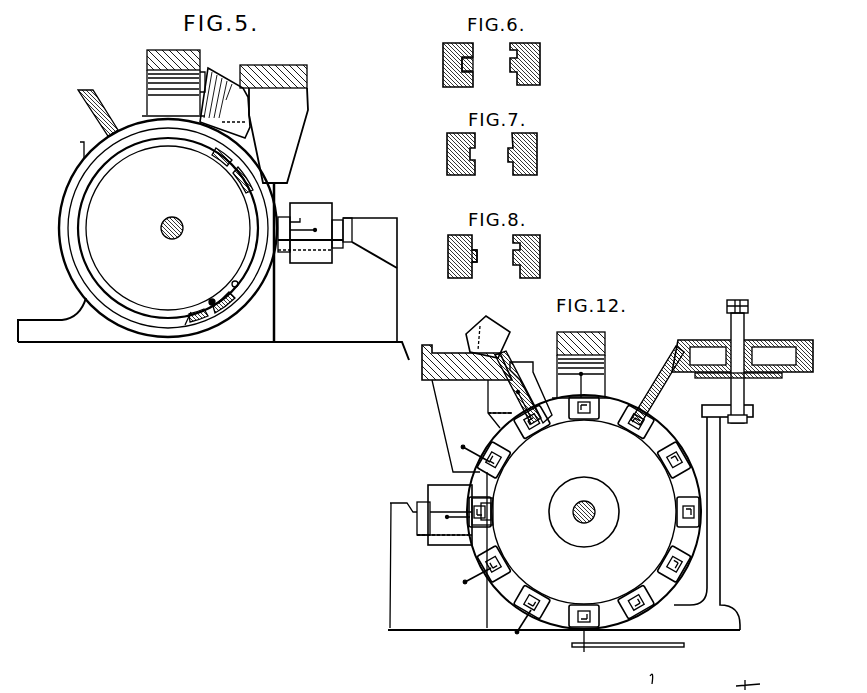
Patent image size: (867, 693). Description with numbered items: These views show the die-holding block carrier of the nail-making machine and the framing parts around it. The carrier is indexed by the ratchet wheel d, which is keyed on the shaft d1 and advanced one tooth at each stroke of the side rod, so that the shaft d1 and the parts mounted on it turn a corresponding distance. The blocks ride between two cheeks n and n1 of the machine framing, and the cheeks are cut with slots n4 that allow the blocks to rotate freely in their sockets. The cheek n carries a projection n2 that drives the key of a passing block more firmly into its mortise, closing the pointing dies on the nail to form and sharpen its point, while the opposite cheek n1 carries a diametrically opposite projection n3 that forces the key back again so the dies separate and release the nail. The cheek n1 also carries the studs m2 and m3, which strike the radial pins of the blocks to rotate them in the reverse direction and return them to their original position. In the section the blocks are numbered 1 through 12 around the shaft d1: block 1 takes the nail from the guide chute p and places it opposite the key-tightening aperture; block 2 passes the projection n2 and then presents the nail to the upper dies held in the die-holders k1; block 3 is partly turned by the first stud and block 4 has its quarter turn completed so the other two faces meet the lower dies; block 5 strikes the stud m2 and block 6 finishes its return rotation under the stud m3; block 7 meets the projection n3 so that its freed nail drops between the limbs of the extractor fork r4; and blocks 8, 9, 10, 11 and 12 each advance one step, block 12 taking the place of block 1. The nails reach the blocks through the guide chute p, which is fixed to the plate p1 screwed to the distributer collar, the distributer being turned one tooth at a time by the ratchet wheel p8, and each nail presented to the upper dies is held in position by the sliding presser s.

In FIG. 5, the cheek n1 is at (168, 228).
In FIG. 6, the cheek n1 is at (450, 62).
In FIG. 7, the cheek n1 is at (454, 152).
In FIG. 8, the cheek n1 is at (454, 254).
In FIG. 5, the shaft d1 is at (183, 228).
In FIG. 12, the shaft d1 is at (578, 522).
In FIG. 5, the slots n4 is at (232, 177).
In FIG. 5, the projection n3 is at (191, 327).
In FIG. 8, the projection n3 is at (477, 258).
In FIG. 5, the stud m2 is at (232, 282).
In FIG. 5, the stud m3 is at (209, 300).
In FIG. 6, the projection n2 is at (506, 62).
In FIG. 6, the cheek n is at (540, 66).
In FIG. 7, the cheek n is at (537, 158).
In FIG. 8, the cheek n is at (540, 258).
In FIG. 12, the ratchet wheel d is at (628, 509).
In FIG. 12, the block 1 is at (636, 429).
In FIG. 12, the block 2 is at (584, 420).
In FIG. 12, the block 3 is at (532, 429).
In FIG. 12, the block 4 is at (491, 462).
In FIG. 12, the block 5 is at (490, 512).
In FIG. 12, the block 6 is at (492, 564).
In FIG. 12, the block 7 is at (532, 603).
In FIG. 12, the block 8 is at (584, 617).
In FIG. 12, the block 9 is at (636, 596).
In FIG. 12, the block 10 is at (667, 563).
In FIG. 12, the block 11 is at (677, 512).
In FIG. 12, the block 12 is at (667, 462).
In FIG. 12, the fork r4 is at (611, 649).
In FIG. 12, the presser s is at (470, 348).
In FIG. 12, the die-holder k1 is at (512, 388).
In FIG. 12, the plate p1 is at (797, 345).
In FIG. 12, the guide chute p is at (732, 318).
In FIG. 12, the ratchet wheel p8 is at (760, 378).